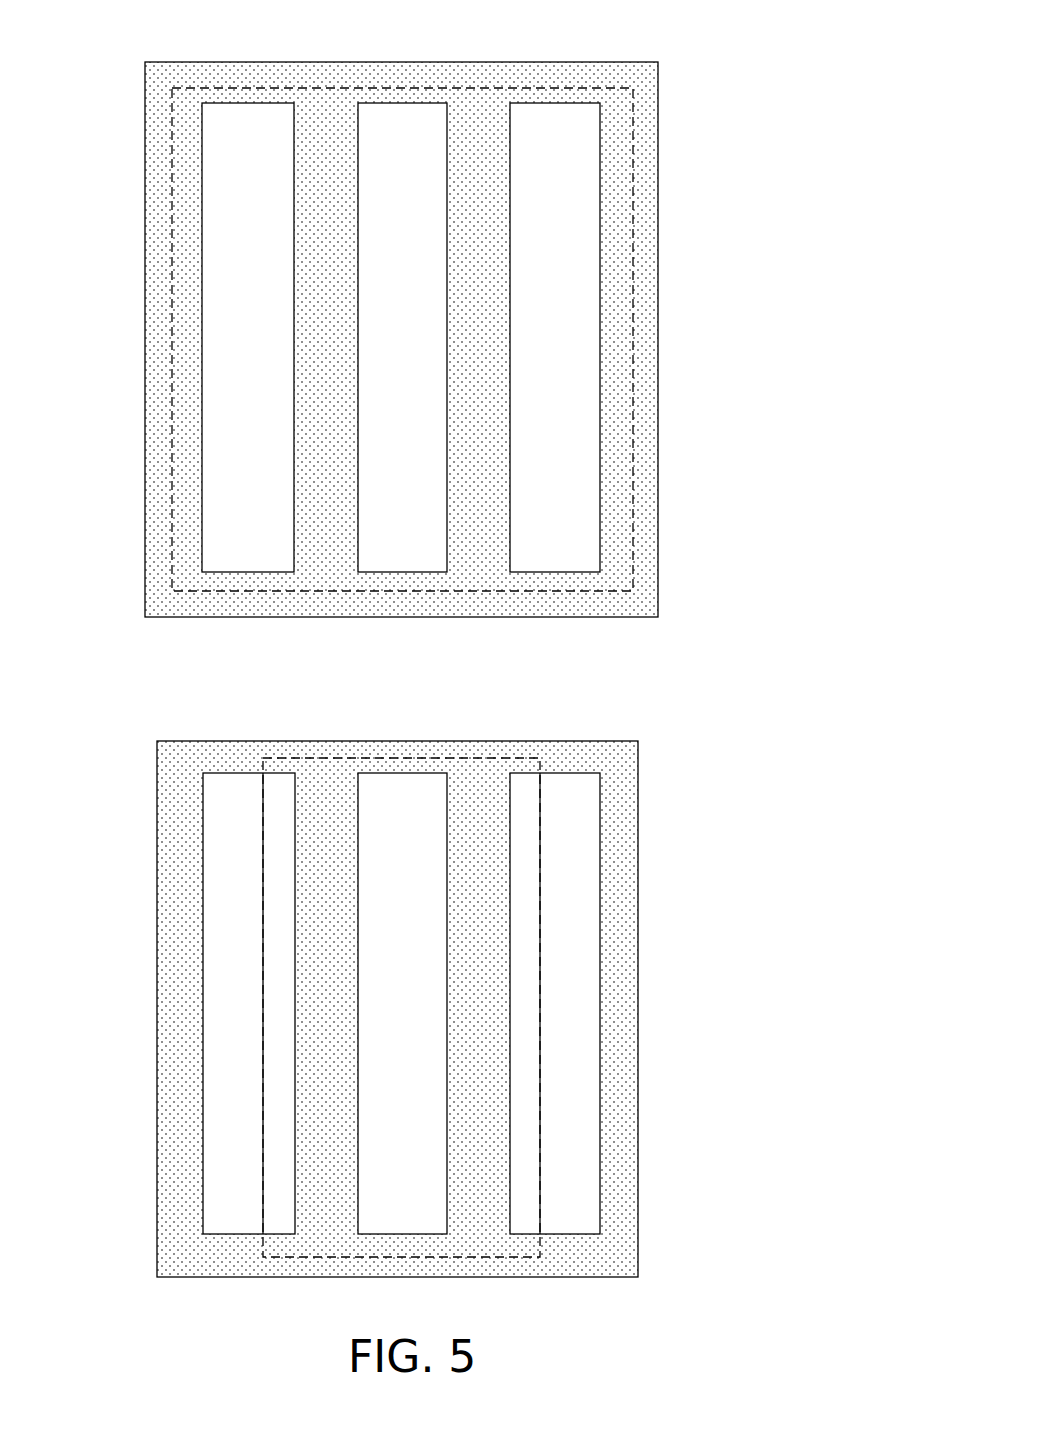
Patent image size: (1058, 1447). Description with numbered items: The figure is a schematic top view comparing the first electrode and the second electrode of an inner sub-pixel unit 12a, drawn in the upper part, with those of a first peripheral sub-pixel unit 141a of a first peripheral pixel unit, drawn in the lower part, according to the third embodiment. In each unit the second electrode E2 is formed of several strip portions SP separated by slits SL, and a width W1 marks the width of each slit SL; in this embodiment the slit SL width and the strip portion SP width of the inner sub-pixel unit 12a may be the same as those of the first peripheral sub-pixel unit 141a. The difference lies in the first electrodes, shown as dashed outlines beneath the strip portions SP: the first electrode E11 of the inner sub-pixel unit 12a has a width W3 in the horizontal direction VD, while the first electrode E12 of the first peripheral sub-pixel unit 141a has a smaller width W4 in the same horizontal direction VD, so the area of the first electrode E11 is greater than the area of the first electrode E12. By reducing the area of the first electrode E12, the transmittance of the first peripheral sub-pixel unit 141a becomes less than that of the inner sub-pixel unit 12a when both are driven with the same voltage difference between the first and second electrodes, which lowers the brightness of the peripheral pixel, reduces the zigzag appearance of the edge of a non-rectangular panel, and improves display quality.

The inner sub-pixel unit 12a is at (455, 334).
The first peripheral sub-pixel unit 141a is at (449, 991).
The slit SL is at (249, 165).
The strip portion SP is at (645, 222).
The second electrode E2 is at (735, 475).
The first electrode of the inner sub-pixel unit E11 is at (172, 572).
The first electrode of the first peripheral sub-pixel unit E12 is at (263, 1253).
The width of the slit W1 is at (265, 338).
The width of the first electrode of the inner sub-pixel unit W3 is at (611, 641).
The width of the first electrode of the first peripheral sub-pixel unit W4 is at (512, 1309).
The horizontal direction VD is at (784, 1323).